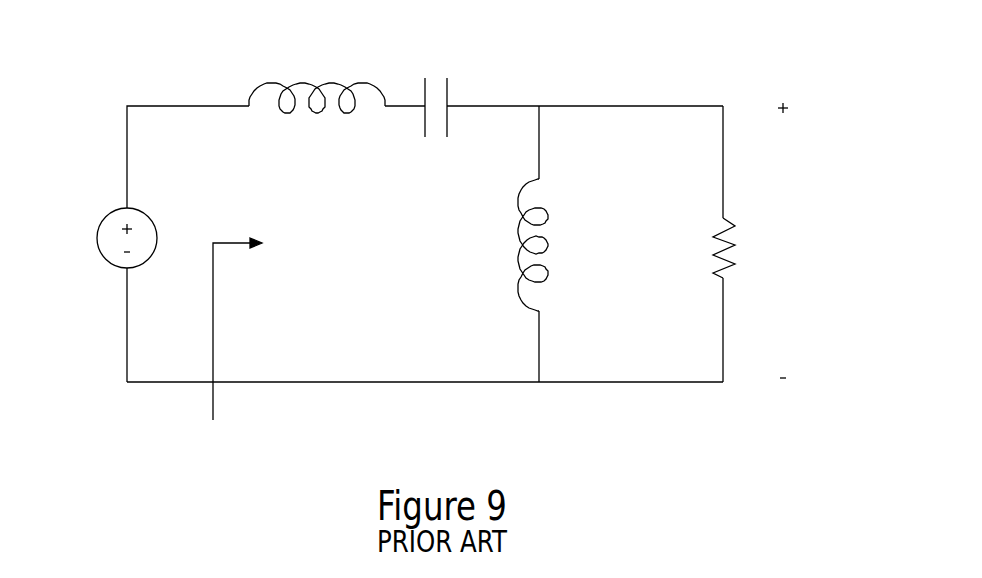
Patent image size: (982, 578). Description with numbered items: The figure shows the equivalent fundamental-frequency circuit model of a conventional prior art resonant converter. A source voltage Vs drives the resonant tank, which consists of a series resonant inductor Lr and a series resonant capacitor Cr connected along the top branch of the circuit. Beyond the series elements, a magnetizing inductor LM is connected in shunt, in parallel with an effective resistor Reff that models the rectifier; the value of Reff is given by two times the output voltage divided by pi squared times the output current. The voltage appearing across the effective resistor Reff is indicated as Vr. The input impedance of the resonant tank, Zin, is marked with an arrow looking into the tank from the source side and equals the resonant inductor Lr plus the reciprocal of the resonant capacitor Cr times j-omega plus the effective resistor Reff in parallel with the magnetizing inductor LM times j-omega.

The source voltage Vs is at (108, 238).
The resonant inductor Lr is at (317, 82).
The resonant capacitor Cr is at (436, 92).
The magnetizing inductor LM is at (510, 245).
The effective resistor Reff is at (696, 248).
The output voltage across effective resistor Vr is at (781, 240).
The input impedance of the resonant tank Zin is at (228, 349).